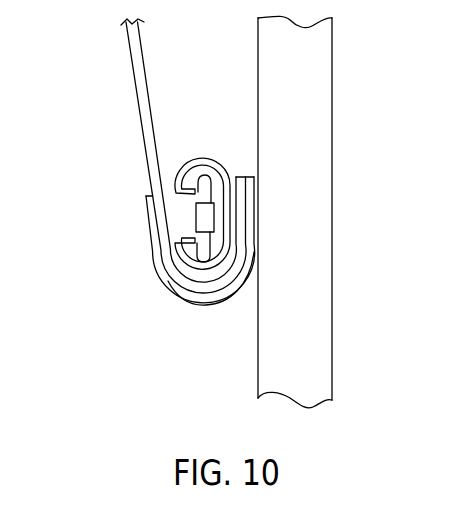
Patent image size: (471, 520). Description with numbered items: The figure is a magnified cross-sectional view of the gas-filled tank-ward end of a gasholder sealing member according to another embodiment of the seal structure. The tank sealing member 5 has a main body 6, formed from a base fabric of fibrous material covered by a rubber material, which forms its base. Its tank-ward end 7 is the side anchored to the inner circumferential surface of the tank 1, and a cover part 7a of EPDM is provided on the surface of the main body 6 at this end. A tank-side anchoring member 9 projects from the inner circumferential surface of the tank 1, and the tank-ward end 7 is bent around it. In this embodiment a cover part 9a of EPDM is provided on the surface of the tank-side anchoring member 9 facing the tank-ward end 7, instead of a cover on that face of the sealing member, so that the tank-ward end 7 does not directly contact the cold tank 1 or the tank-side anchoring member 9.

The tank 1 is at (318, 193).
The tank sealing member 5 is at (128, 61).
The main body 6 is at (148, 131).
The tank-ward end 7 is at (182, 280).
The cover part 7a is at (204, 308).
The tank-side anchoring member 9 is at (200, 158).
The cover part 9a is at (221, 158).